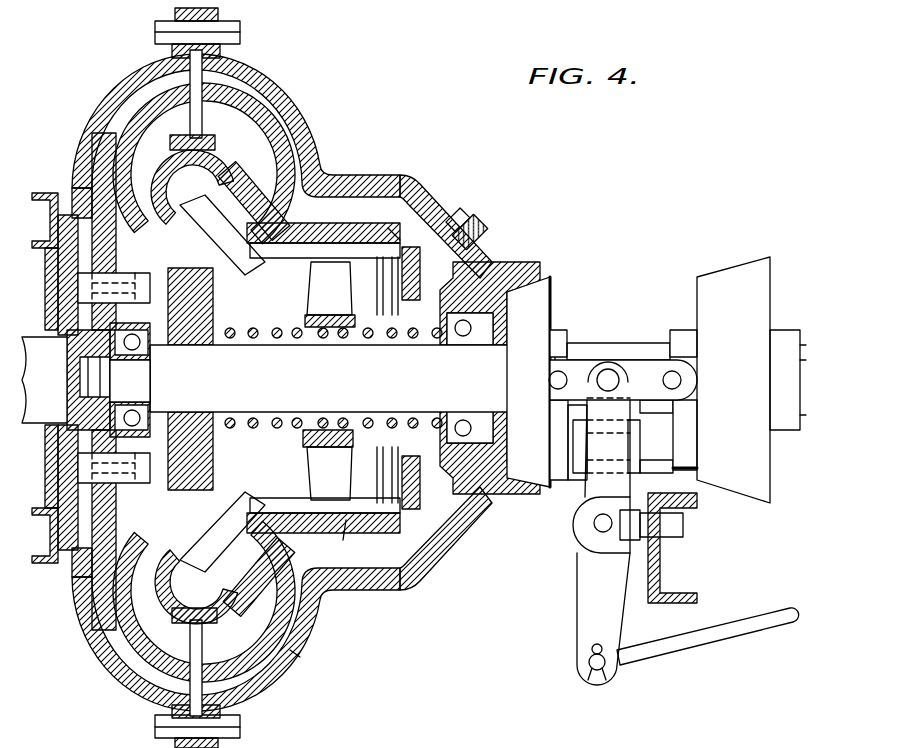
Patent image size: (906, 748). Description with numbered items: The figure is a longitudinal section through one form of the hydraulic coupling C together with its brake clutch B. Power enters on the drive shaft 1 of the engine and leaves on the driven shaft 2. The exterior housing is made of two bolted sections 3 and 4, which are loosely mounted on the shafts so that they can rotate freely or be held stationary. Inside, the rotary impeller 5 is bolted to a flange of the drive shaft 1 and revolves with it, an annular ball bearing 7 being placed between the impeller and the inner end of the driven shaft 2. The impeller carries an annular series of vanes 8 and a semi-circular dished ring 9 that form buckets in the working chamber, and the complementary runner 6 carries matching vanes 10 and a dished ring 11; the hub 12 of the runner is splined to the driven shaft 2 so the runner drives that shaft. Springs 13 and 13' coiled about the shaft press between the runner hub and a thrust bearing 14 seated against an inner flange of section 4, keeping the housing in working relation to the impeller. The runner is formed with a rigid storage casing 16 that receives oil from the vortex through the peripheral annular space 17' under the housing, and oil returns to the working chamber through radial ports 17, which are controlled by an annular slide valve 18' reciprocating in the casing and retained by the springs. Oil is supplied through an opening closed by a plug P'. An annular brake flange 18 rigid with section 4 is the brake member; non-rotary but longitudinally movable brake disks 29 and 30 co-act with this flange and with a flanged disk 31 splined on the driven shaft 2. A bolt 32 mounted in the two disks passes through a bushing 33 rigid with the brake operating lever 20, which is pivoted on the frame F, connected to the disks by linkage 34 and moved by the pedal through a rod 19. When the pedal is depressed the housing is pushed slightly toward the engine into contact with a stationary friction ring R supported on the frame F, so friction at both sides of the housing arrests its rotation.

The drive shaft 1 is at (44, 380).
The driven shaft 2 is at (332, 378).
The housing section 3 is at (107, 660).
The housing section 4 is at (300, 657).
The rotary impeller 5 is at (97, 172).
The runner 6 is at (282, 86).
The annular ball bearing 7 is at (90, 378).
The vanes 8 is at (204, 163).
The dished ring 9 is at (165, 214).
The vanes 10 is at (204, 601).
The dished ring 11 is at (228, 577).
The hub of the runner 12 is at (268, 275).
The spring 13 is at (333, 372).
The spring 13' is at (333, 402).
The thrust bearing 14 is at (460, 313).
The storage casing 16 is at (392, 243).
The radial ports 17 is at (266, 377).
The peripheral annular space 17' is at (446, 215).
The brake flange 18 is at (470, 500).
The annular slide valve 18' is at (357, 542).
The link or rod 19 is at (737, 628).
The brake operating lever 20 is at (576, 622).
The brake disk 29 is at (553, 277).
The brake disk 30 is at (688, 442).
The flanged disk 31 is at (747, 262).
The bolt 32 is at (652, 455).
The bushing 33 is at (577, 472).
The linkage 34 is at (637, 367).
The hydraulic coupling C is at (356, 97).
The brake clutch B is at (625, 267).
The plug P' is at (496, 218).
The friction ring R is at (40, 403).
The frame F is at (720, 582).